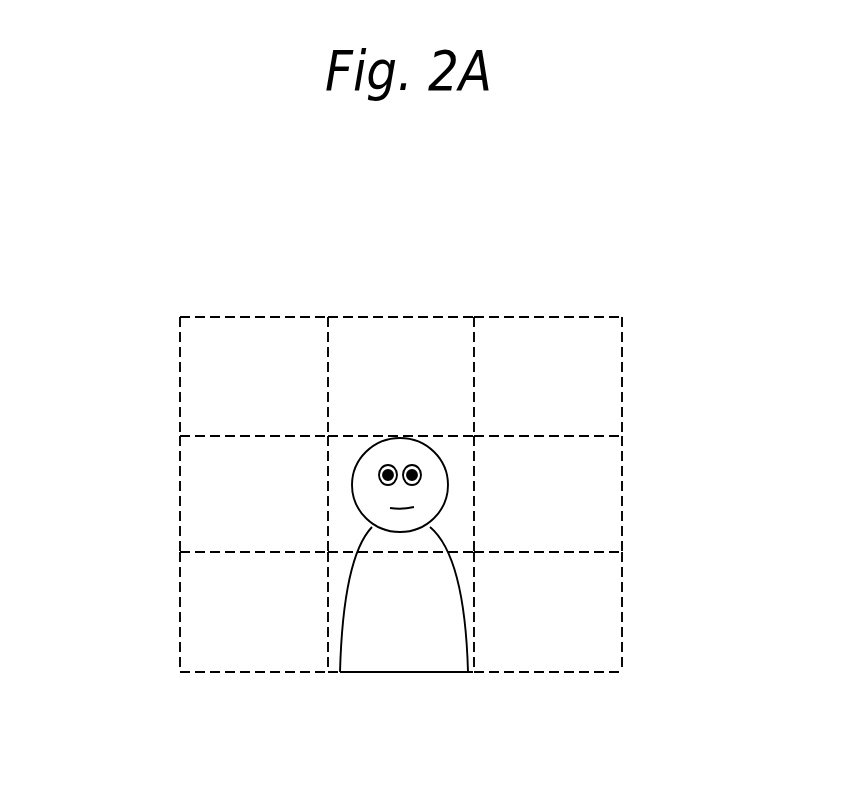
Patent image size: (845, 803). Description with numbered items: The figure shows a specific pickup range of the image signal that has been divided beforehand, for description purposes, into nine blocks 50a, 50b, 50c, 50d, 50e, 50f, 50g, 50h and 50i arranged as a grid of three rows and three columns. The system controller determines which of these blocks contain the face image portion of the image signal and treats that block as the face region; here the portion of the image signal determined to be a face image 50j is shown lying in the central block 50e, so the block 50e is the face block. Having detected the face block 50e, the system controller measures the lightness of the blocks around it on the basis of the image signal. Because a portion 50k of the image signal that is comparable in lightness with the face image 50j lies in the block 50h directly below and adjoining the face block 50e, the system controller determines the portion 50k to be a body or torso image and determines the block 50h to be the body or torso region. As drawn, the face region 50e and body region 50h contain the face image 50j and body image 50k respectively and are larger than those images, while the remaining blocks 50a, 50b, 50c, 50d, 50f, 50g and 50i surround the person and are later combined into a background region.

The block 50a is at (252, 328).
The block 50b is at (400, 328).
The block 50c is at (556, 328).
The block 50d is at (207, 497).
The face block 50e is at (465, 513).
The block 50f is at (602, 532).
The block 50g is at (260, 648).
The body block 50h is at (337, 590).
The block 50i is at (587, 640).
The face image 50j is at (447, 467).
The body image 50k is at (417, 650).